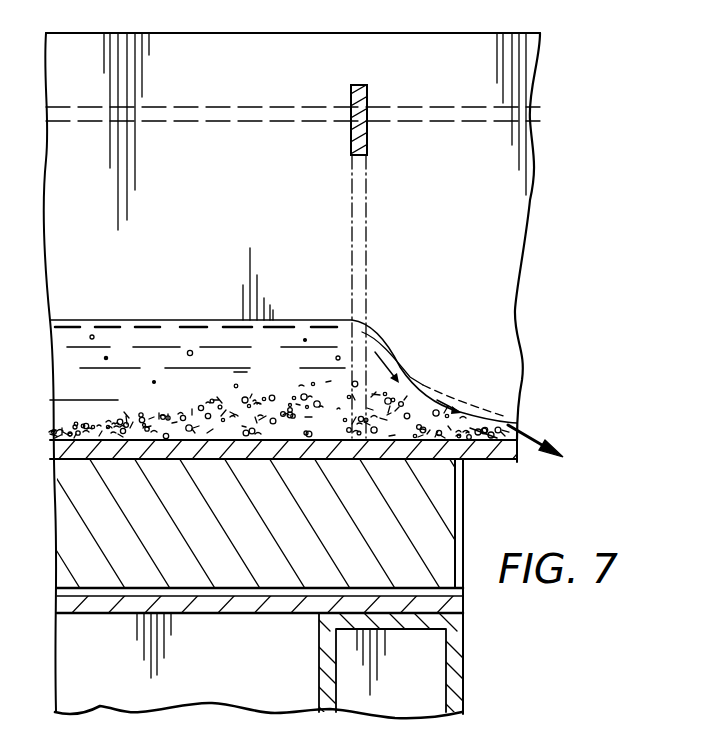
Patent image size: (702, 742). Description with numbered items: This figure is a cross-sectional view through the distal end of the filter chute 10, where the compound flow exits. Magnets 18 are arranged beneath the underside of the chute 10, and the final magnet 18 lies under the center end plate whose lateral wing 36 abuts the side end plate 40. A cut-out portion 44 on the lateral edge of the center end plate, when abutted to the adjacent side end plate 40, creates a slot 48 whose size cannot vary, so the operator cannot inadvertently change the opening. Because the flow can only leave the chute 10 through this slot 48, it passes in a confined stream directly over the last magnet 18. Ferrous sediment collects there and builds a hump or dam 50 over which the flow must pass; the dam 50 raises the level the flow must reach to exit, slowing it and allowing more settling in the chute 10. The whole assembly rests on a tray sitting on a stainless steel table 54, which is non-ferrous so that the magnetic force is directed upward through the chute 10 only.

The filter chute 10 is at (528, 310).
The magnets 18 is at (432, 517).
The lateral wing 36 is at (364, 96).
The side end plate 40 is at (480, 237).
The cut-out portion 44 is at (361, 186).
The slot 48 is at (364, 276).
The dam 50 is at (382, 322).
The stainless steel table 54 is at (247, 606).